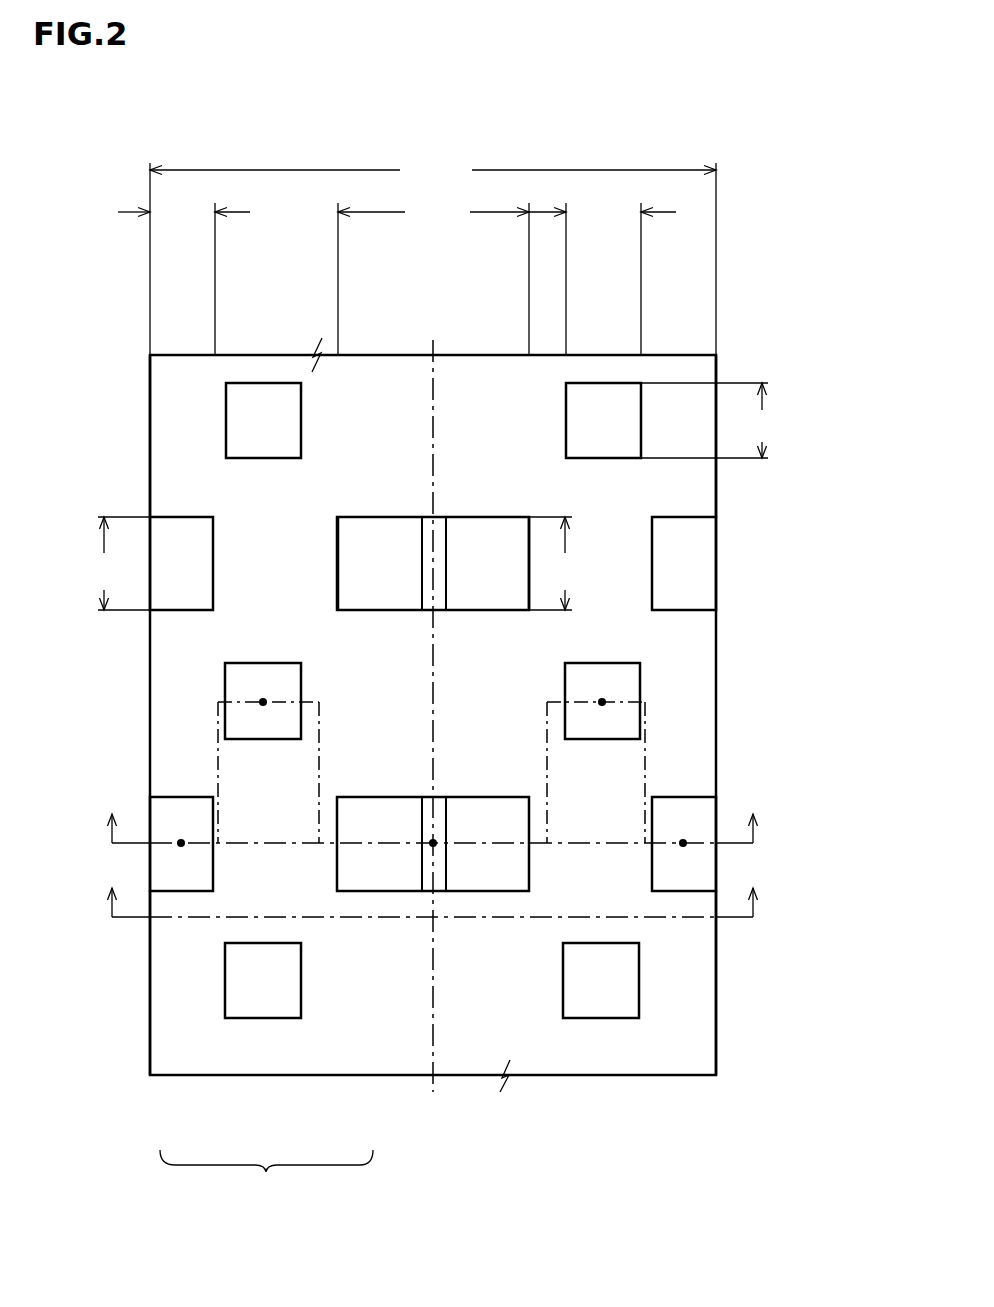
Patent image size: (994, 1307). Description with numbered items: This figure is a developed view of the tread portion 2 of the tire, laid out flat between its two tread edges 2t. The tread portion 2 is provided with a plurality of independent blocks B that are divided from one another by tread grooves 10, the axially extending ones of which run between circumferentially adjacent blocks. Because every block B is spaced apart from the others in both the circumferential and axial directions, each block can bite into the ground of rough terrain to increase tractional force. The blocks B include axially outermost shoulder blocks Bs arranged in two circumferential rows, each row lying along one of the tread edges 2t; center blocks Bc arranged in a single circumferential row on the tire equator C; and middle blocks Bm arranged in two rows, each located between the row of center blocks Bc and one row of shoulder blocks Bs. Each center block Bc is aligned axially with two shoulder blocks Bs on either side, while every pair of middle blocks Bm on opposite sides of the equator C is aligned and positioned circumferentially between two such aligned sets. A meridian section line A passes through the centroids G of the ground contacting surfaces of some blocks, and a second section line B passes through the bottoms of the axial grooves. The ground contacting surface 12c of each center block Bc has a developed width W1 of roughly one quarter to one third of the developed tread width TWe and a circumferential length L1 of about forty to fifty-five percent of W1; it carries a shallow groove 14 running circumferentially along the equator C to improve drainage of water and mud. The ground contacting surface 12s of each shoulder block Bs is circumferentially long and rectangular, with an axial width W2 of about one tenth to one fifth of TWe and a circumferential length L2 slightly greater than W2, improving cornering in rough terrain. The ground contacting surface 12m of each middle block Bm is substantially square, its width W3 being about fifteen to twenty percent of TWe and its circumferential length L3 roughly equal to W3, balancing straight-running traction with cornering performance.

The tread portion 2 is at (733, 325).
The tread edge 2t is at (150, 995).
The tread groove 10 is at (622, 645).
The ground contacting surface of shoulder block 12s is at (188, 550).
The ground contacting surface of center block 12c is at (493, 545).
The ground contacting surface of middle block 12m is at (602, 405).
The shallow groove 14 is at (441, 545).
The middle block Bm is at (275, 405).
The shoulder block Bs is at (197, 590).
The center block Bc is at (375, 545).
The block B is at (433, 1035).
The centroid G is at (263, 702).
The A-A section A is at (432, 815).
The tire equator C is at (432, 731).
The developed width of tread surface TWe is at (433, 255).
The developed width of center block contact surface W1 is at (433, 277).
The developed axial width of shoulder block contact surface W2 is at (184, 277).
The developed width of middle block contact surface W3 is at (602, 277).
The developed circumferential length of center block contact surface L1 is at (555, 563).
The developed circumferential length of shoulder block contact surface L2 is at (119, 563).
The developed circumferential length of middle block contact surface L3 is at (708, 420).